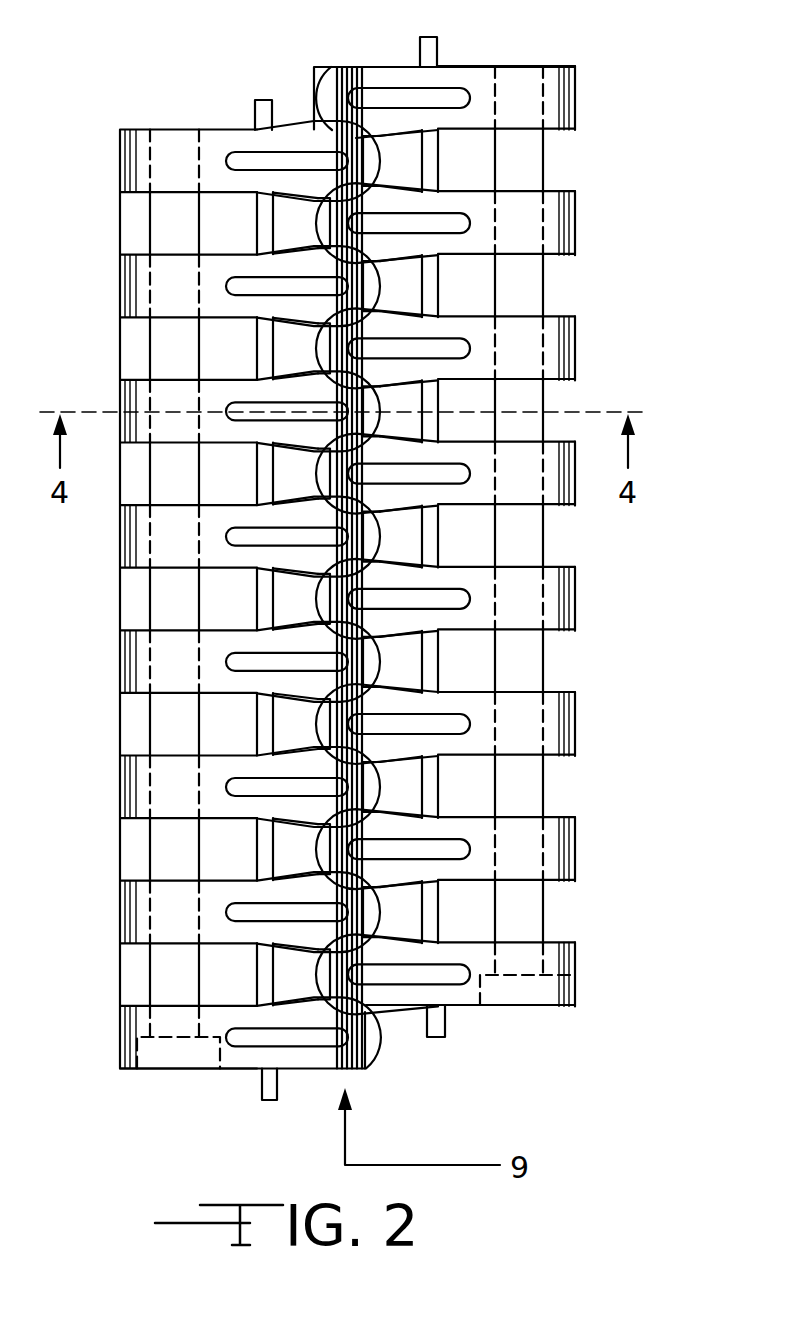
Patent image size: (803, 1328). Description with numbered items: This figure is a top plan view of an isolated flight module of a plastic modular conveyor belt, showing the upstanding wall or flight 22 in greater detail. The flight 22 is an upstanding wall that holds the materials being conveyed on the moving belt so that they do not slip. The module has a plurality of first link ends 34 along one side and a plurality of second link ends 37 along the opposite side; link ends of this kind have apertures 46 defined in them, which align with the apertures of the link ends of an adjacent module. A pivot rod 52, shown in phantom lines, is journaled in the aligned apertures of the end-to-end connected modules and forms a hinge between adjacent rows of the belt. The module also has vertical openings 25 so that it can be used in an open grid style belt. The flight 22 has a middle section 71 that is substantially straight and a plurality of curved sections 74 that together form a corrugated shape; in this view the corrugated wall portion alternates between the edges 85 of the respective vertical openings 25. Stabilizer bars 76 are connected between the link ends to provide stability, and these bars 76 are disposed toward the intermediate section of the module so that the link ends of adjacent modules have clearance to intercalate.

The upstanding wall or flight 22 is at (362, 800).
The vertical openings 25 is at (452, 96).
The first link ends 34 is at (214, 140).
The second link ends 37 is at (563, 97).
The apertures 46 is at (161, 298).
The pivot rod 52 is at (172, 972).
The middle section 71 is at (405, 375).
The curved sections 74 is at (338, 470).
The stabilizer bars 76 is at (437, 278).
The edges 85 is at (356, 596).